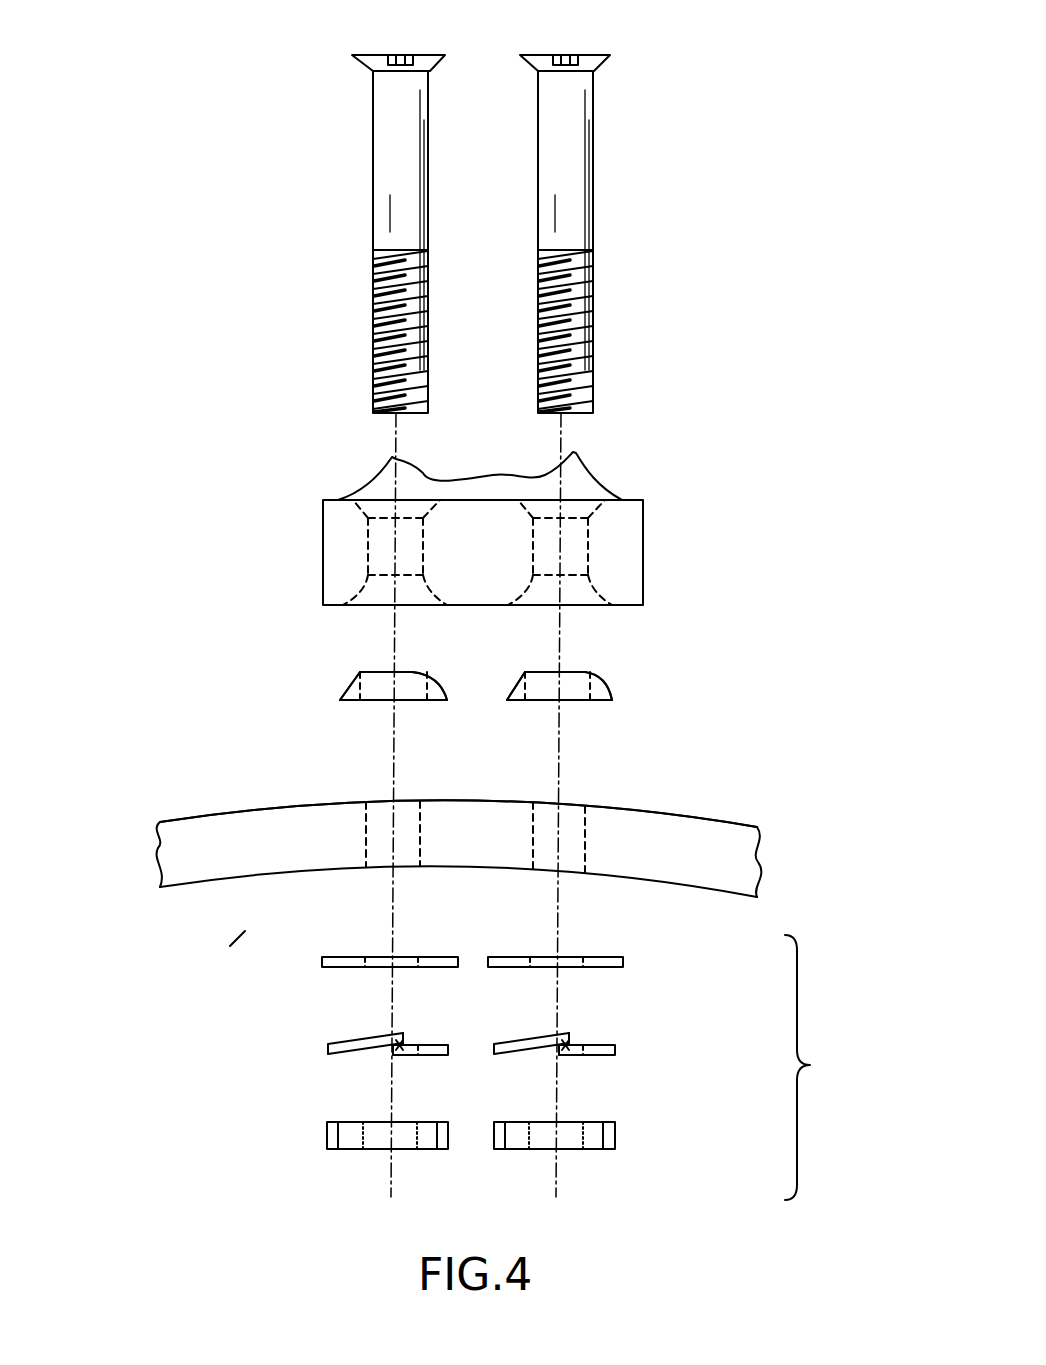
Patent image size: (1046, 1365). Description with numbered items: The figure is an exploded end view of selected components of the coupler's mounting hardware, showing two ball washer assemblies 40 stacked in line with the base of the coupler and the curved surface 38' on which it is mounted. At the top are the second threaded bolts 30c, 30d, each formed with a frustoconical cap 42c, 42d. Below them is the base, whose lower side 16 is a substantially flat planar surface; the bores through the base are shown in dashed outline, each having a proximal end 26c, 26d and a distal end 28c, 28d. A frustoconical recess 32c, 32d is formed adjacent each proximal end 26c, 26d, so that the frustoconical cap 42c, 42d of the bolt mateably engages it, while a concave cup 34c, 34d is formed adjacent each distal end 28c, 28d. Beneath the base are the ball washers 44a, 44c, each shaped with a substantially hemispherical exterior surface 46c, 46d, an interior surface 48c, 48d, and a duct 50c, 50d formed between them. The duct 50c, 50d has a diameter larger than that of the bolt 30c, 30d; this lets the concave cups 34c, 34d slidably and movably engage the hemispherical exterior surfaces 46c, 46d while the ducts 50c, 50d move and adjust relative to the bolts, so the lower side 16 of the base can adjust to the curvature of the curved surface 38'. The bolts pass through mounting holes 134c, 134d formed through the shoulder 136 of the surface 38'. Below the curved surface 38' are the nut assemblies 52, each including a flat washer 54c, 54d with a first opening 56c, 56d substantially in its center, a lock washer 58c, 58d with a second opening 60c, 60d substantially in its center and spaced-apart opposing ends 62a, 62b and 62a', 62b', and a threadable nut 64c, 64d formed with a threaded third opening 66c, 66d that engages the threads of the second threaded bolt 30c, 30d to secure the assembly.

The lower side 16 is at (605, 607).
The proximal end 26c is at (590, 518).
The proximal end 26d is at (368, 518).
The distal end 28c is at (588, 575).
The distal end 28d is at (368, 575).
The second threaded bolt 30c is at (593, 168).
The second threaded bolt 30d is at (373, 170).
The frustoconical recess 32c is at (585, 514).
The frustoconical recess 32d is at (368, 516).
The concave cup 34c is at (515, 583).
The concave cup 34d is at (343, 598).
The curved surface 38' is at (444, 822).
The ball washer assembly 40 is at (238, 938).
The frustoconical cap 42c is at (595, 55).
The frustoconical cap 42d is at (368, 55).
The ball washer 44a is at (345, 687).
The ball washer 44c is at (612, 697).
The substantially hemispherical exterior surface 46c is at (510, 686).
The substantially hemispherical exterior surface 46d is at (442, 688).
The interior surface 48c is at (528, 690).
The interior surface 48d is at (357, 690).
The duct 50c is at (572, 690).
The duct 50d is at (403, 681).
The nut assembly 52 is at (815, 1067).
The flat washer 54c is at (623, 962).
The flat washer 54d is at (438, 958).
The first opening 56c is at (570, 960).
The first opening 56d is at (385, 962).
The lock washer 58c is at (615, 1050).
The lock washer 58d is at (330, 1050).
The second opening 60c is at (565, 1046).
The second opening 60d is at (400, 1046).
The opposing end 62a is at (335, 1079).
The opposing end 62b is at (429, 1073).
The opposing end 62a' is at (508, 1079).
The opposing end 62b' is at (597, 1073).
The threadable nut 64c is at (592, 1150).
The threadable nut 64d is at (353, 1150).
The threaded third opening 66c is at (532, 1140).
The threaded third opening 66d is at (413, 1135).
The mounting hole 134c is at (585, 828).
The mounting hole 134d is at (365, 828).
The shoulder 136 is at (190, 838).